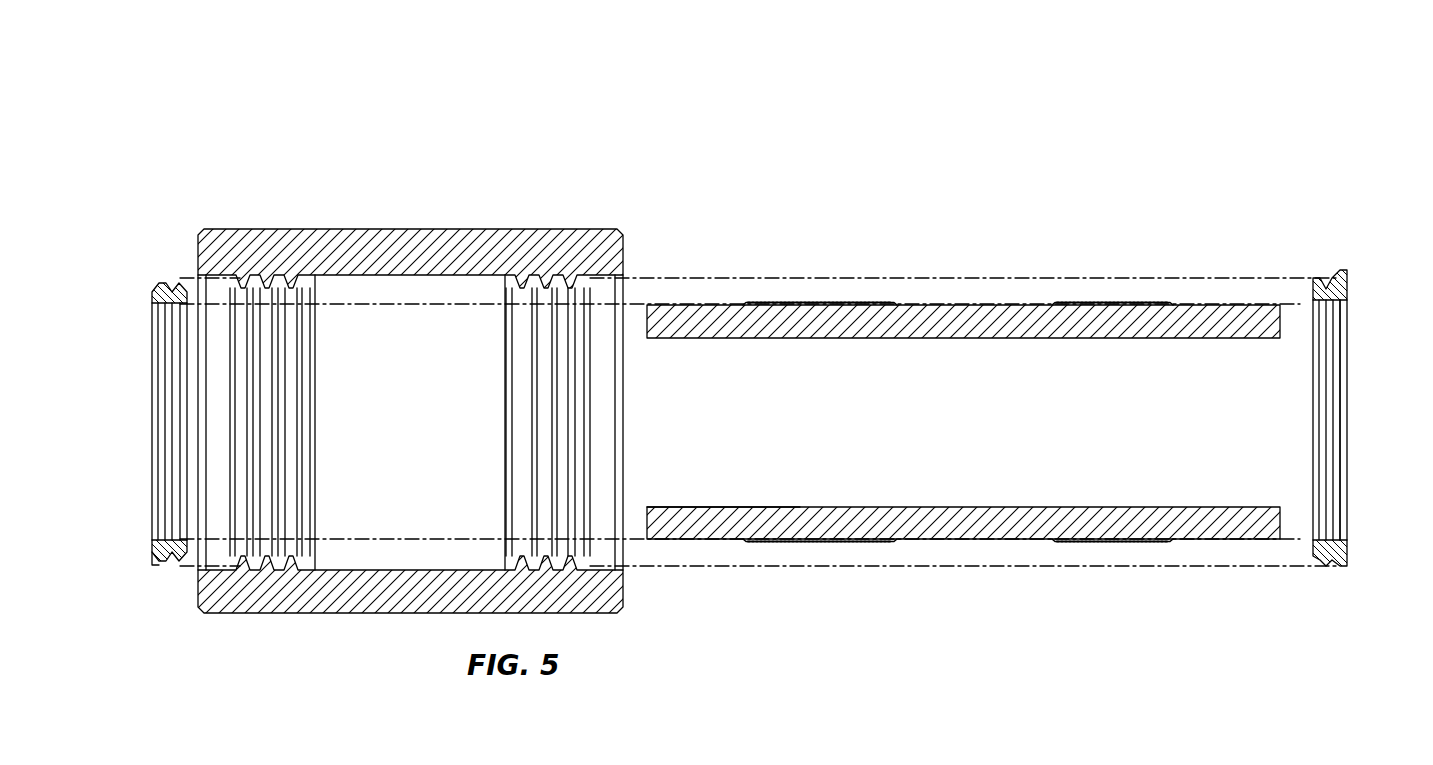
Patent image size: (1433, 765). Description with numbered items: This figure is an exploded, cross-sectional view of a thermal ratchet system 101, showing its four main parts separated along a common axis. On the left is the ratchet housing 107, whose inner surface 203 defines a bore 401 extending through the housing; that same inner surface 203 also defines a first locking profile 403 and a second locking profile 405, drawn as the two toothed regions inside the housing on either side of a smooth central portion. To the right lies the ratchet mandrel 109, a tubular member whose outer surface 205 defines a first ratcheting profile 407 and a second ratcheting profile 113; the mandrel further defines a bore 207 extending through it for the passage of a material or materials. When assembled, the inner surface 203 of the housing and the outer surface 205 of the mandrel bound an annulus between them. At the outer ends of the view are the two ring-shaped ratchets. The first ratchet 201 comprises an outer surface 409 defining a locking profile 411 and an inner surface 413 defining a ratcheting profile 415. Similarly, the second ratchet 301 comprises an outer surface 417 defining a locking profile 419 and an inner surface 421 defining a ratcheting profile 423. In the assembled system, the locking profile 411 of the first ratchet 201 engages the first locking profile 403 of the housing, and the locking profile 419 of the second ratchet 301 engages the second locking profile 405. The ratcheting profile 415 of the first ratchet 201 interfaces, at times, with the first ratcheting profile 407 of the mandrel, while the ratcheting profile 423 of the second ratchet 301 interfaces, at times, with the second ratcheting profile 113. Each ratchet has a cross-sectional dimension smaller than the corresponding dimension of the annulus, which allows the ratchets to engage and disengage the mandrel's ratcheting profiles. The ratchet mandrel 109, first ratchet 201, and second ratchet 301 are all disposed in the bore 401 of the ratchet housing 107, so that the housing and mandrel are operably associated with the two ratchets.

The thermal ratchet system 101 is at (837, 129).
The ratchet housing 107 is at (360, 418).
The ratchet mandrel 109 is at (961, 424).
The second ratcheting profile 113 is at (1107, 305).
The first ratchet 201 is at (173, 400).
The inner surface 203 is at (428, 283).
The outer surface 205 is at (980, 538).
The bore 207 is at (750, 480).
The second ratchet 301 is at (1311, 447).
The bore 401 is at (438, 557).
The first locking profile 403 is at (247, 365).
The second locking profile 405 is at (575, 377).
The first ratcheting profile 407 is at (842, 304).
The outer surface 409 is at (170, 277).
The locking profile 411 is at (168, 557).
The inner surface 413 is at (166, 304).
The ratcheting profile 415 is at (160, 540).
The outer surface 417 is at (1332, 280).
The locking profile 419 is at (1328, 566).
The inner surface 421 is at (1337, 310).
The ratcheting profile 423 is at (1338, 535).